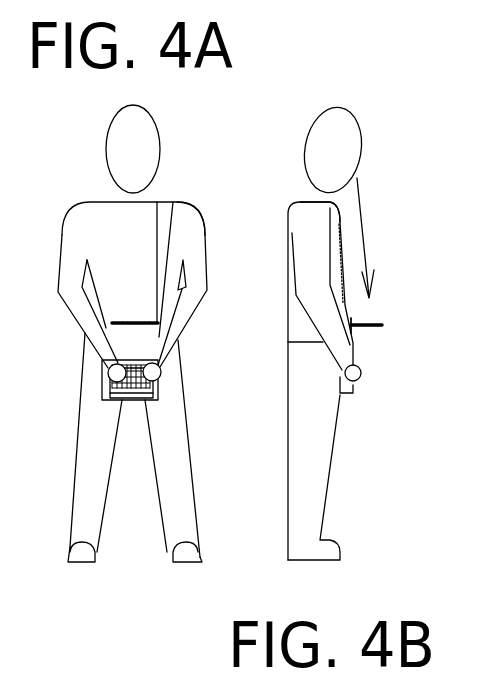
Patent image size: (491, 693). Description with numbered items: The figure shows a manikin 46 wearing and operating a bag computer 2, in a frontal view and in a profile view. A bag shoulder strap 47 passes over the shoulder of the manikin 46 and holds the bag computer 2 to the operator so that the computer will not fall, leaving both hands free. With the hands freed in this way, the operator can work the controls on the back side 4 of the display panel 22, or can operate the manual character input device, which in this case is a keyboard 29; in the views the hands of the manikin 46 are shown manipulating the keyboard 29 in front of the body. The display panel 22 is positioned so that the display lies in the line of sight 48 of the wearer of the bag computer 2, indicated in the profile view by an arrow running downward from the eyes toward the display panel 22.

In FIG. 4A, the bag computer 2 is at (135, 340).
In FIG. 4B, the bag computer 2 is at (340, 387).
In FIG. 4B, the back side 4 is at (369, 328).
In FIG. 4B, the display panel 22 is at (372, 320).
In FIG. 4A, the keyboard 29 is at (158, 393).
In FIG. 4A, the manikin 46 is at (190, 203).
In FIG. 4B, the manikin 46 is at (293, 202).
In FIG. 4A, the bag shoulder strap 47 is at (163, 212).
In FIG. 4B, the line of sight 48 is at (363, 208).